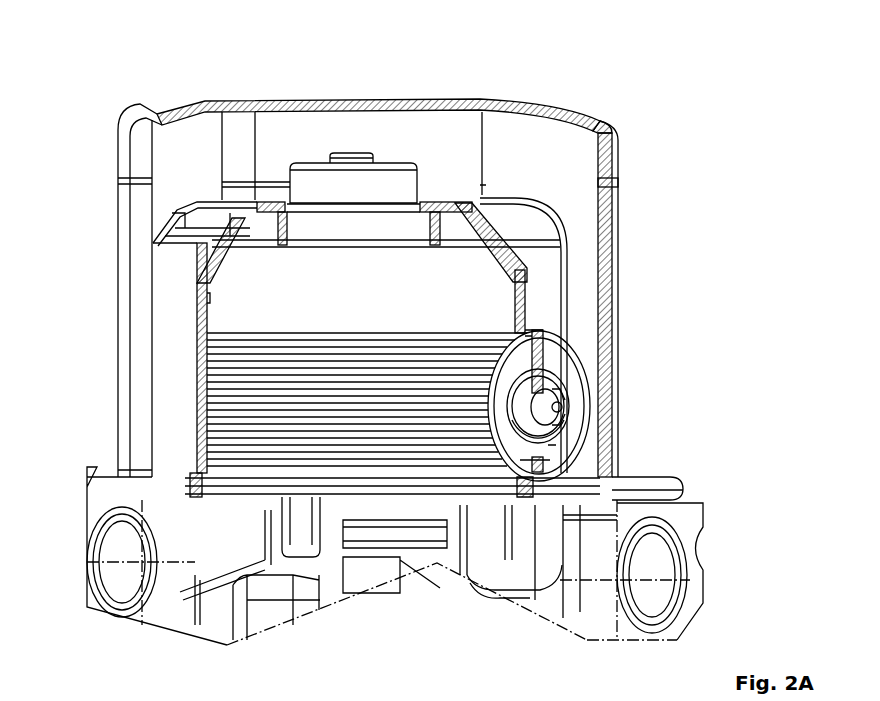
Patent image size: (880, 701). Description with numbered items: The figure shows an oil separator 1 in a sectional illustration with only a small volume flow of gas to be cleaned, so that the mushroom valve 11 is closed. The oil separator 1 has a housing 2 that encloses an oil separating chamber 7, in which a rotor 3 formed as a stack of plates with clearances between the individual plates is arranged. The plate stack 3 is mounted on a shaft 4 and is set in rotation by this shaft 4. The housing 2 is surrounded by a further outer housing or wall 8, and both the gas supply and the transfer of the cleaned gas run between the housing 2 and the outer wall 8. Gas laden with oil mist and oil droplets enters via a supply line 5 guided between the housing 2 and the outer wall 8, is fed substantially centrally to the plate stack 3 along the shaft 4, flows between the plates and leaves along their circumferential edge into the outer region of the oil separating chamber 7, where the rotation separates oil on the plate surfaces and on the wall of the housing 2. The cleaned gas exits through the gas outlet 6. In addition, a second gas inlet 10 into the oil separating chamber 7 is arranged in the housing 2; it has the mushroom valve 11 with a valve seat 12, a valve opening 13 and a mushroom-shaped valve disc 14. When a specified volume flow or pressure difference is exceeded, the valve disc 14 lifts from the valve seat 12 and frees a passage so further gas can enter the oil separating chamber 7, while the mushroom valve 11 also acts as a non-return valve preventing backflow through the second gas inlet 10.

The oil separator 1 is at (674, 269).
The housing 2 is at (523, 235).
The rotor 3 is at (355, 303).
The shaft 4 is at (373, 158).
The supply line 5 is at (345, 155).
The gas outlet 6 is at (238, 225).
The oil separating chamber 7 is at (215, 280).
The outer housing/wall 8 is at (122, 280).
The second gas inlet 10 is at (547, 437).
The mushroom valve 11 is at (547, 355).
The valve seat 12 is at (540, 378).
The valve opening 13 is at (537, 450).
The valve disc 14 is at (518, 372).